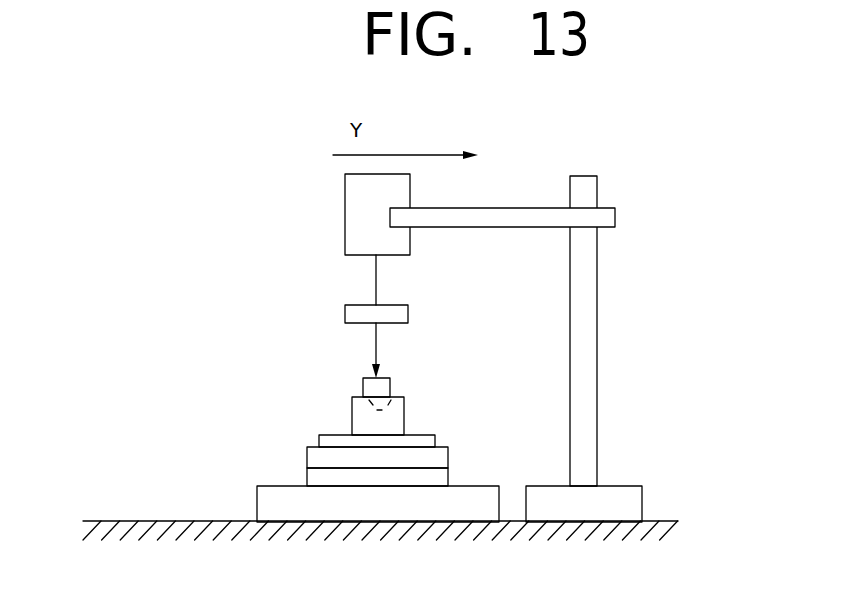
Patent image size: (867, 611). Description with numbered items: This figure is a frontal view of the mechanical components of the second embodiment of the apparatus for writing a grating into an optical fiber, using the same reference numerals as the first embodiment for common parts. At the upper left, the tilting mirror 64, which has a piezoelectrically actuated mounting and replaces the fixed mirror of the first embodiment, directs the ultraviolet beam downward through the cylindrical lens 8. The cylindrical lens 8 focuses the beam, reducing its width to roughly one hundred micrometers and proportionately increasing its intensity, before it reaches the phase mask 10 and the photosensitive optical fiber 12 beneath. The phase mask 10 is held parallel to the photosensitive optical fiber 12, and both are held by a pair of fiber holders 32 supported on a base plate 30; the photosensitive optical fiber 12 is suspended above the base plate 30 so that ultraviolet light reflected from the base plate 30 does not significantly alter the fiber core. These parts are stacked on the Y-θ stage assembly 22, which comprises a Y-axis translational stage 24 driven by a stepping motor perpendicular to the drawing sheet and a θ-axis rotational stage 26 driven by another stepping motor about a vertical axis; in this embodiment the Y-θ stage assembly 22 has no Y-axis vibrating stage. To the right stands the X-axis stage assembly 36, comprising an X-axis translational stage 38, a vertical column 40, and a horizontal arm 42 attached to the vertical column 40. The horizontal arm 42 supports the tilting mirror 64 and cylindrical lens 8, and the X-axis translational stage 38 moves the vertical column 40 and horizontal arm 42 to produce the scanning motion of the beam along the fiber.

The cylindrical lens 8 is at (345, 316).
The phase mask 10 is at (363, 389).
The photosensitive optical fiber 12 is at (393, 389).
The Y-θ stage assembly 22 is at (290, 444).
The Y-axis translational stage 24 is at (257, 500).
The θ-axis rotational stage 26 is at (307, 468).
The base plate 30 is at (319, 437).
The fiber holders 32 is at (352, 412).
The X-axis stage assembly 36 is at (572, 349).
The X-axis translational stage 38 is at (628, 495).
The vertical column 40 is at (590, 331).
The horizontal arm 42 is at (612, 221).
The tilting mirror 64 is at (345, 216).